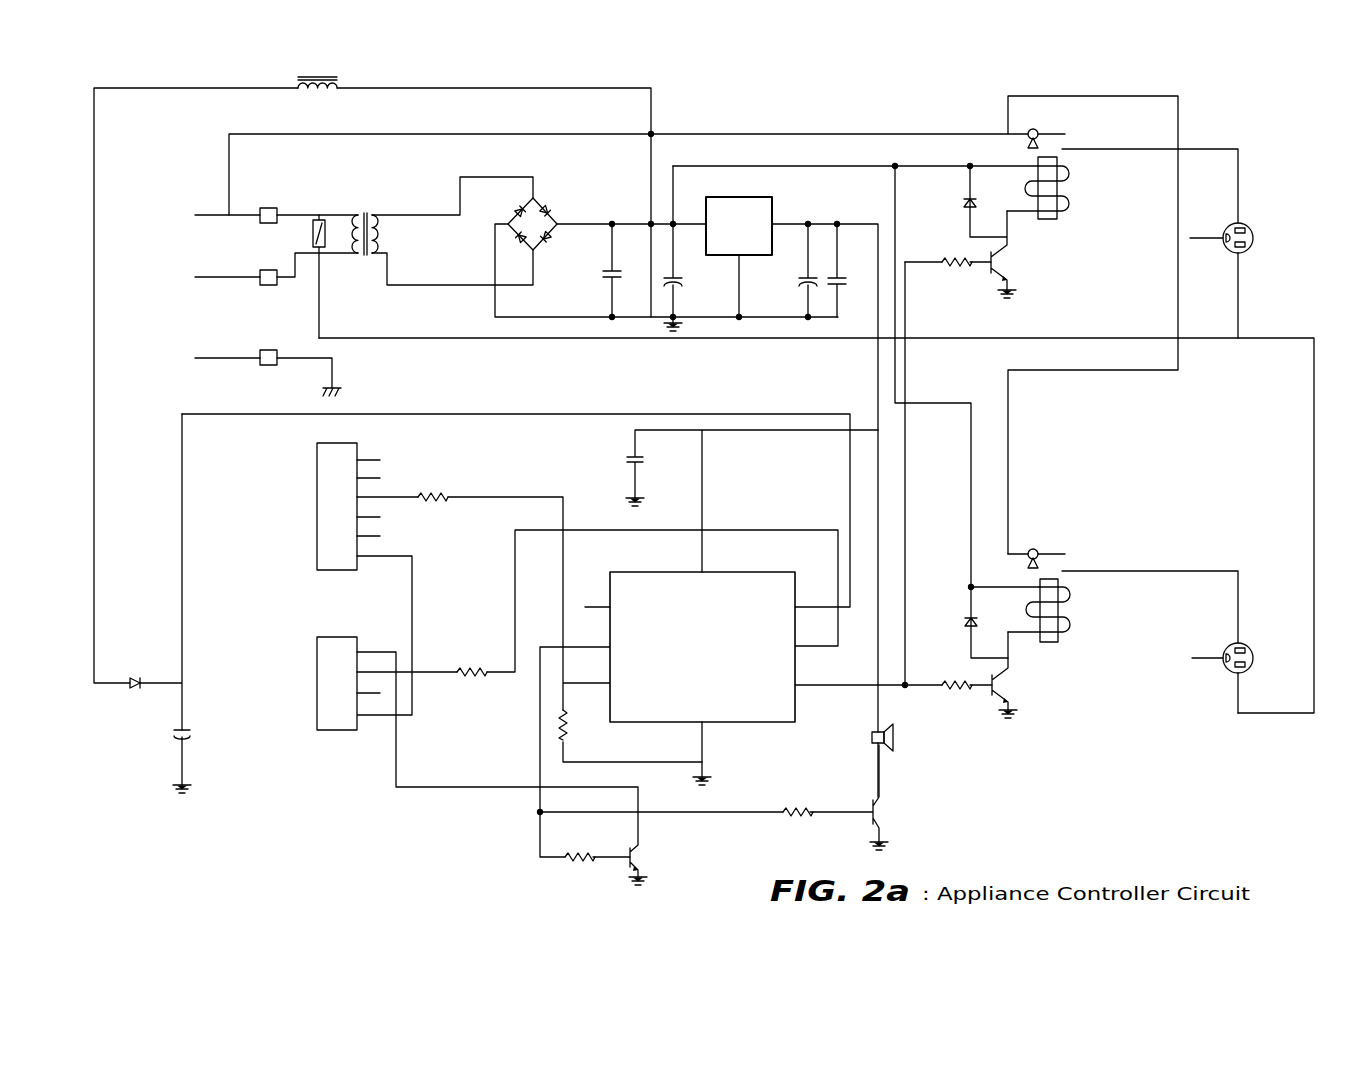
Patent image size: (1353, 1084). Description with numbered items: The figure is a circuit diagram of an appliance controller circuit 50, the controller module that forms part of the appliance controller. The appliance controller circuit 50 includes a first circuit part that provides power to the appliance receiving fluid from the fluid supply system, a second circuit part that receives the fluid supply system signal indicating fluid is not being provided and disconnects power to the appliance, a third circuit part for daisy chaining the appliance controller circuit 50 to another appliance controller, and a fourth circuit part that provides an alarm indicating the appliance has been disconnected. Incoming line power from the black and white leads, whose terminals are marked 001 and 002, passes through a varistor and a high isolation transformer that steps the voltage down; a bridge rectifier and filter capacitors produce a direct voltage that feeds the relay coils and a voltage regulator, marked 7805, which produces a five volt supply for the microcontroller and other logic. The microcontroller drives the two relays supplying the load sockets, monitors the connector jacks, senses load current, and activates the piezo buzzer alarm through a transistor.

The appliance controller circuit 50 is at (1253, 131).
The black line terminal 001 is at (268, 205).
The white line terminal 002 is at (268, 289).
The voltage regulator 7805 is at (772, 215).